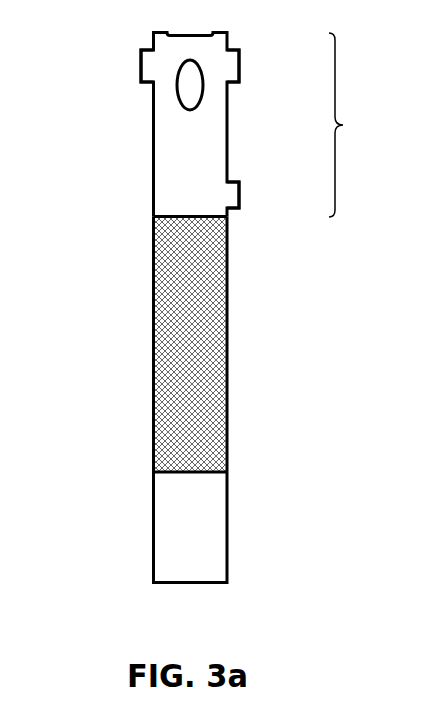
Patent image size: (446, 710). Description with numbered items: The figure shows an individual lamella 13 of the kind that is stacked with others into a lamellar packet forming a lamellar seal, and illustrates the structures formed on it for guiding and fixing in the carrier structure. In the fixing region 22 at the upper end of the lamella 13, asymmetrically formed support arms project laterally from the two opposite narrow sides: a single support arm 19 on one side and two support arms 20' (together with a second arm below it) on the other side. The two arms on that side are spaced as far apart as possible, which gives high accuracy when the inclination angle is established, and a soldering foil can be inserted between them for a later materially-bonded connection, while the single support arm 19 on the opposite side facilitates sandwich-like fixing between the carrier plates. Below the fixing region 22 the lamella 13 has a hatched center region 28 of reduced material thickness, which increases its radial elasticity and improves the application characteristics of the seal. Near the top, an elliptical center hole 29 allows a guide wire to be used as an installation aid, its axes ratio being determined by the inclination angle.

The lamella 13 is at (122, 232).
The support arm 19 is at (147, 69).
The support arm 20' is at (277, 67).
The fixing region 22 is at (347, 125).
The center region 28 is at (185, 403).
The center hole 29 is at (190, 87).